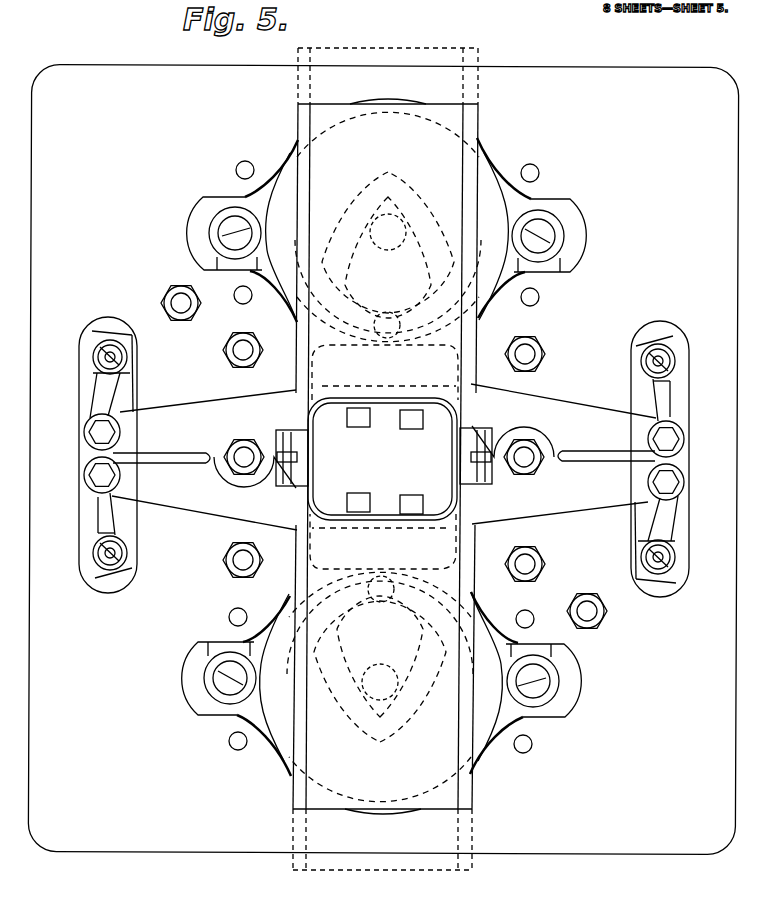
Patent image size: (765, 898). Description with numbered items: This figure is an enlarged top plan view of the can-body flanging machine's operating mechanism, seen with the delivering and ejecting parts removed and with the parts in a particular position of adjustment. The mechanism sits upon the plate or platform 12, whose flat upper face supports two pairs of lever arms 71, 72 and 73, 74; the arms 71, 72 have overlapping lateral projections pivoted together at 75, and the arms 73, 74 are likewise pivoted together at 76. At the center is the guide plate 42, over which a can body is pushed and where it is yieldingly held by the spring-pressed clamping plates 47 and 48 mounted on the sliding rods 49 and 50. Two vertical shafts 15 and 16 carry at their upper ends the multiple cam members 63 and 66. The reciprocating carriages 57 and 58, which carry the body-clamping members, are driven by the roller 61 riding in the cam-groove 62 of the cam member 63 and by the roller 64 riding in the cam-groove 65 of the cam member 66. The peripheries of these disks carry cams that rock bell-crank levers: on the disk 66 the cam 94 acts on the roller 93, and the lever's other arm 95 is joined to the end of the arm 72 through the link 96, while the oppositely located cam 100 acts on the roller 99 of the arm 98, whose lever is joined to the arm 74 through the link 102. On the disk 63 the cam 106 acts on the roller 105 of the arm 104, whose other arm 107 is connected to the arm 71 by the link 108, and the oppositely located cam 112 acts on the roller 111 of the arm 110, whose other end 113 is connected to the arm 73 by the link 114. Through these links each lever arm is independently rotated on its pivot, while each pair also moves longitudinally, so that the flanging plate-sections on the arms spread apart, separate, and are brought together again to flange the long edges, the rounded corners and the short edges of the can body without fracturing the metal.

The plate or platform 12 is at (604, 66).
The vertical shaft 15 is at (388, 695).
The vertical shaft 16 is at (382, 246).
The guide plate 42 is at (387, 497).
The clamping plate 47 is at (300, 433).
The clamping plate 48 is at (470, 433).
The sliding rod 49 is at (282, 457).
The sliding rod 50 is at (492, 463).
The reciprocating carriage 57 is at (430, 810).
The reciprocating carriage 58 is at (343, 107).
The roller 61 is at (386, 597).
The cam-groove 62 is at (343, 713).
The multiple cam member 63 is at (480, 730).
The roller 64 is at (387, 321).
The cam-groove 65 is at (482, 167).
The multiple cam member 66 is at (485, 272).
The lever arm 71 is at (185, 502).
The lever arm 72 is at (177, 412).
The lever arm 73 is at (573, 508).
The lever arm 74 is at (587, 412).
The pivot 75 is at (243, 455).
The pivot 76 is at (527, 458).
The roller 93 is at (222, 218).
The cam 94 is at (272, 208).
The bell-crank arm 95 is at (128, 340).
The link 96 is at (100, 390).
The bell-crank arm 98 is at (552, 267).
The roller 99 is at (560, 237).
The cam 100 is at (503, 215).
The link 102 is at (662, 402).
The bell-crank arm 104 is at (222, 643).
The roller 105 is at (208, 678).
The cam 106 is at (253, 713).
The bell-crank arm 107 is at (128, 565).
The link 108 is at (105, 525).
The bell-crank arm 110 is at (550, 652).
The roller 111 is at (555, 673).
The cam 112 is at (502, 705).
The bell-crank lever end 113 is at (642, 573).
The link 114 is at (658, 528).